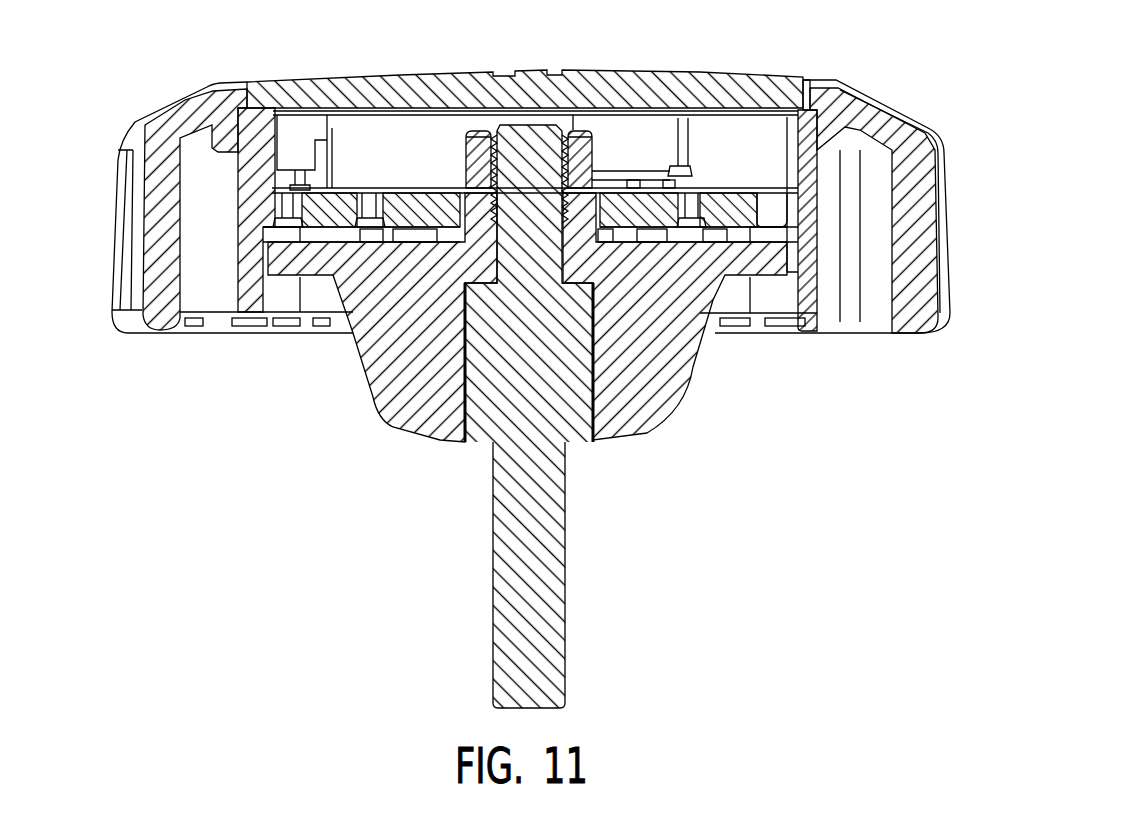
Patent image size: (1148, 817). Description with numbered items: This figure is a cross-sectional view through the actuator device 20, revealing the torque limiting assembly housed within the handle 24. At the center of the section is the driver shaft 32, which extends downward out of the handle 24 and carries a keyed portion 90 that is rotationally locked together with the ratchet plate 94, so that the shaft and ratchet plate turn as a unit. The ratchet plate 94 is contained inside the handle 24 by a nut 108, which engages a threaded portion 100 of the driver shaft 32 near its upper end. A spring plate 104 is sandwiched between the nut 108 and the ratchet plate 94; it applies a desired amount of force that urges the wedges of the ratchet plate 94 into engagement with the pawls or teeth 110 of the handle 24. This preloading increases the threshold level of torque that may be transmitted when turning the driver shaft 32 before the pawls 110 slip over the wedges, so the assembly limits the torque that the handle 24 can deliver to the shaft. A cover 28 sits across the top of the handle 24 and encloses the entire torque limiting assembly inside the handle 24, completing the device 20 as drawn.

The actuator device 20 is at (908, 77).
The handle 24 is at (948, 203).
The cover 28 is at (345, 79).
The driver shaft 32 is at (565, 565).
The keyed portion 90 is at (600, 373).
The ratchet plate 94 is at (697, 372).
The threaded portion 100 is at (537, 143).
The spring plate 104 is at (706, 190).
The nut 108 is at (481, 132).
The pawls or teeth 110 is at (727, 217).